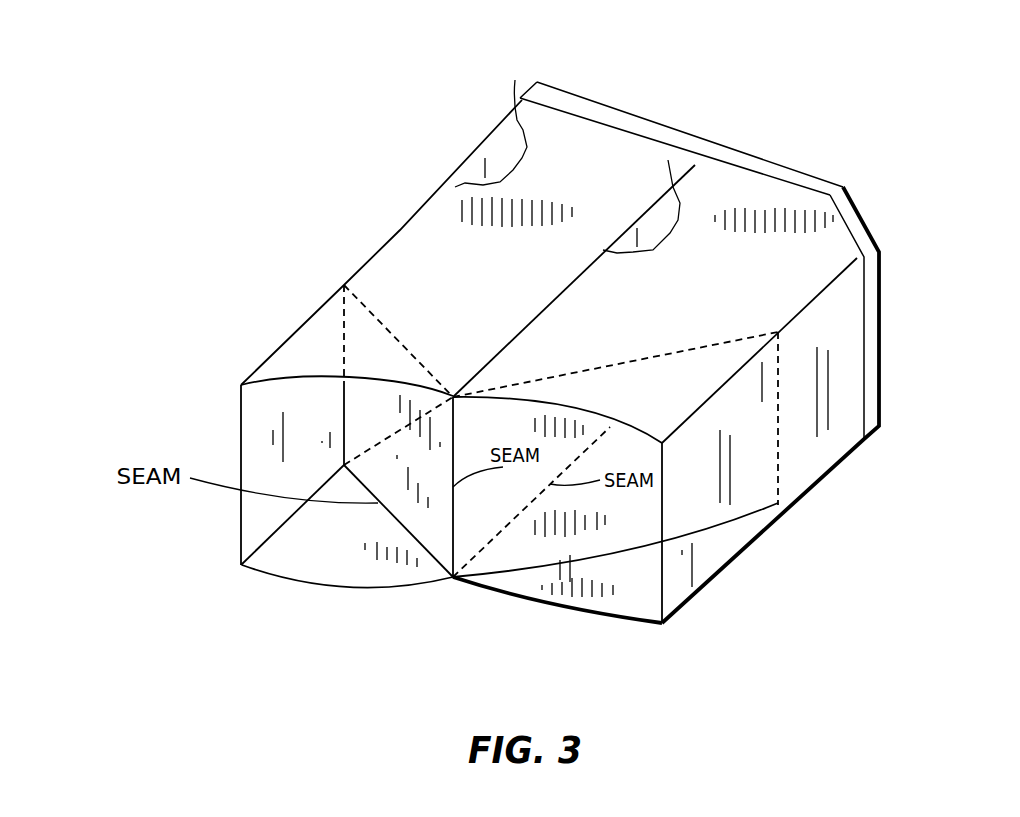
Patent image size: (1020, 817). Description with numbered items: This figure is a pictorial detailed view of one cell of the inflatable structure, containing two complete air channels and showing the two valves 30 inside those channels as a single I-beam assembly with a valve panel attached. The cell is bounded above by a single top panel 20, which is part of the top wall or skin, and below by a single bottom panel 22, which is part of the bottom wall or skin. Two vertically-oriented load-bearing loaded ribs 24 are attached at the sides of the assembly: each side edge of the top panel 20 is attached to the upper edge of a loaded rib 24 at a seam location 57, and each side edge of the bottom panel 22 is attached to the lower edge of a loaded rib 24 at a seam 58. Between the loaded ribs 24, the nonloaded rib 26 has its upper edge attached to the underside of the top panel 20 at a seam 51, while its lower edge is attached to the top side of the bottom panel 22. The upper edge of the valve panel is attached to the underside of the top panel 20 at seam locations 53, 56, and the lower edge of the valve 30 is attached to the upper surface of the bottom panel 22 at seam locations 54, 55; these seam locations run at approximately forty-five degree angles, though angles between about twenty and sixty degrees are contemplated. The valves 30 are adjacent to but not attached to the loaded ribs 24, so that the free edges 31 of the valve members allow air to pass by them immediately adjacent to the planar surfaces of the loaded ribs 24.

The top panel 20 is at (607, 307).
The bottom panel 22 is at (610, 611).
The loaded rib 24 is at (820, 330).
The nonloaded rib 26 is at (668, 160).
The valve 30 is at (735, 598).
The free edge 31 is at (840, 473).
The seam 51 is at (505, 348).
The seam location 53 is at (657, 352).
The seam location 54 is at (727, 523).
The seam location 55 is at (453, 523).
The seam location 56 is at (407, 348).
The seam location 57 is at (818, 290).
The seam 58 is at (678, 615).